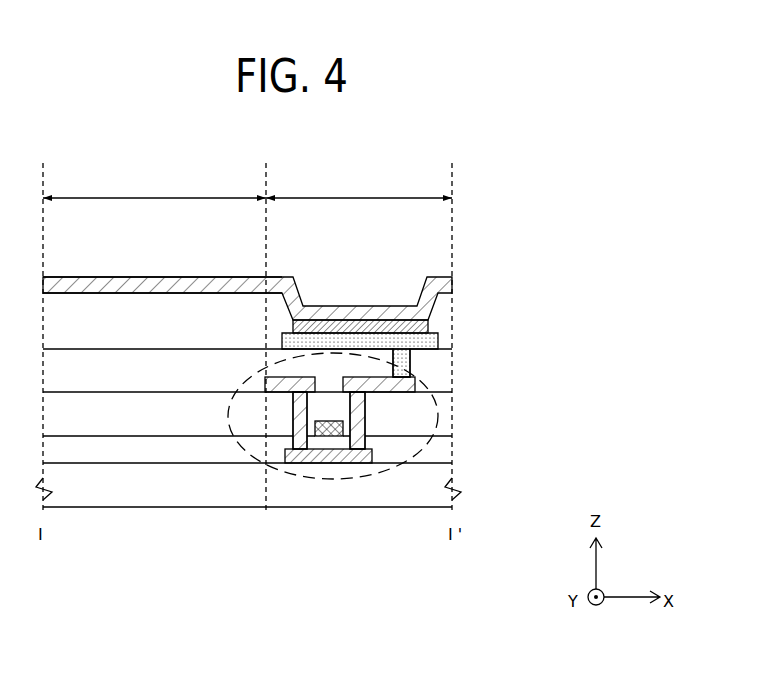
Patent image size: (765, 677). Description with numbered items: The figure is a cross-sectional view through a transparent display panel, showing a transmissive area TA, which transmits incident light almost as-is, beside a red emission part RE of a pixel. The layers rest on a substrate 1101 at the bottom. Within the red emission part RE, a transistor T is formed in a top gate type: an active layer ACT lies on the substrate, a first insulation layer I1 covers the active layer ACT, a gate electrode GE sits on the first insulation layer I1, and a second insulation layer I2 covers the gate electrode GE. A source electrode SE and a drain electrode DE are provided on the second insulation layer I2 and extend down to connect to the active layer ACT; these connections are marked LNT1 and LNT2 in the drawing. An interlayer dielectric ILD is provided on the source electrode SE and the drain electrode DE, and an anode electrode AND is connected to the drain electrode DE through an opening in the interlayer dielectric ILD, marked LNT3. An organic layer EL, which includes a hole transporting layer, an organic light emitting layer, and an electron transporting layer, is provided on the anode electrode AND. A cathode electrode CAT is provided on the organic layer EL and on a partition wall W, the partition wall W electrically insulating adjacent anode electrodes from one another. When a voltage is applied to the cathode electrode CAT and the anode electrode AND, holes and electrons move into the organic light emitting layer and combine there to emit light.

The transmissive area TA is at (154, 185).
The red emission part RE is at (359, 185).
The partition wall W is at (173, 320).
The first laser annealed contact portion LNT1 is at (300, 398).
The second laser annealed contact portion LNT2 is at (358, 398).
The third laser annealed contact portion LNT3 is at (403, 356).
The cathode electrode CAT is at (452, 286).
The organic layer EL is at (428, 328).
The anode electrode AND is at (436, 341).
The interlayer dielectric ILD is at (452, 373).
The second insulation layer I2 is at (452, 418).
The first insulation layer I1 is at (452, 452).
The substrate 1101 is at (452, 481).
The source electrode SE is at (292, 423).
The gate electrode GE is at (329, 438).
The active layer ACT is at (352, 455).
The drain electrode DE is at (368, 428).
The transistor T is at (388, 452).